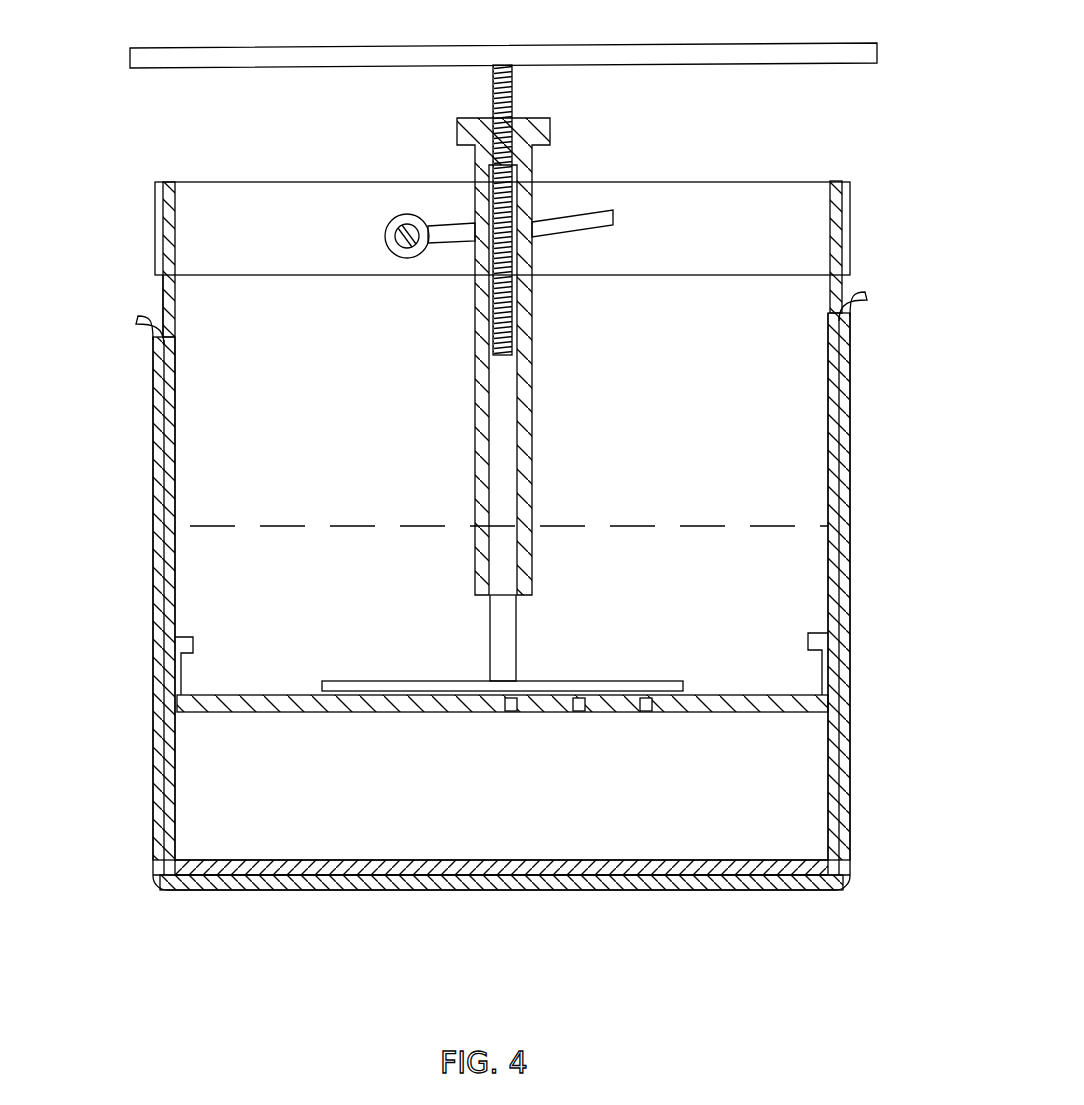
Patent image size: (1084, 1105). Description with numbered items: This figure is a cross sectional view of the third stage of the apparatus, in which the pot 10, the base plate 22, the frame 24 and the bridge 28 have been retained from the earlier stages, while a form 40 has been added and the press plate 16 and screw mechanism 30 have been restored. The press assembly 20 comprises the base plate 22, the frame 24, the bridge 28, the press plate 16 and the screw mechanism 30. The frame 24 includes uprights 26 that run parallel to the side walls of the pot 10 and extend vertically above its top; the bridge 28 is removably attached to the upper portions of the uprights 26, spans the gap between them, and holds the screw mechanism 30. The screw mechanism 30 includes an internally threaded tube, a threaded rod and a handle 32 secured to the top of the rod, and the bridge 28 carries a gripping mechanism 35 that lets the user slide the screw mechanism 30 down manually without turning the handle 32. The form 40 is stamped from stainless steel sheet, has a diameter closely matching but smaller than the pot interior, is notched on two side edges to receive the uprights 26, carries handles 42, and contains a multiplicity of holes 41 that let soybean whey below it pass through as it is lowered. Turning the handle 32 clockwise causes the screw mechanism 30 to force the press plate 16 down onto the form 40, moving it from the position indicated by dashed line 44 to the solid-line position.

The pot 10 is at (155, 438).
The press plate 16 is at (379, 630).
The press assembly 20 is at (700, 150).
The base plate 22 is at (491, 897).
The frame 24 is at (200, 760).
The uprights 26 is at (165, 300).
The bridge 28 is at (282, 217).
The screw mechanism 30 is at (550, 130).
The handle 32 is at (703, 53).
The gripping mechanism 35 is at (452, 230).
The form 40 is at (740, 707).
The holes 41 is at (645, 702).
The handles 42 is at (546, 616).
The dashed line 44 is at (730, 526).